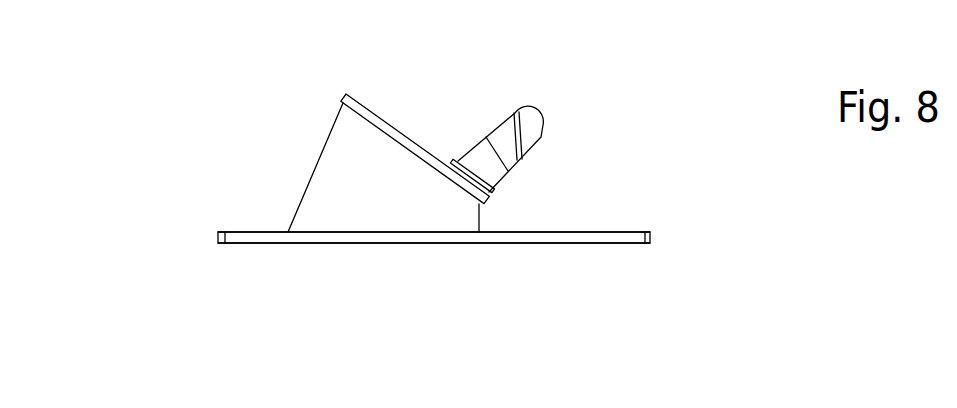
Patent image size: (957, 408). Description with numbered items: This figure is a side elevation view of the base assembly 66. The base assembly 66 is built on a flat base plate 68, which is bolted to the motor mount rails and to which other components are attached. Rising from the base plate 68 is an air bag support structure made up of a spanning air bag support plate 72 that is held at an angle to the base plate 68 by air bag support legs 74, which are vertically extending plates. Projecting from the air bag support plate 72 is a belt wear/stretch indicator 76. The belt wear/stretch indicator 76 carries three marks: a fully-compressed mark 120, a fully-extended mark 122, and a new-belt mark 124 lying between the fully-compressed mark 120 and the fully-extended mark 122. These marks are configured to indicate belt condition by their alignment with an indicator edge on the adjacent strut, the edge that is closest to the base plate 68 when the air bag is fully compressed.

The base assembly 66 is at (229, 97).
The base plate 68 is at (628, 240).
The air bag support plate 72 is at (377, 110).
The air bag support legs 74 is at (342, 185).
The belt wear/stretch indicator 76 is at (526, 130).
The fully-compressed mark 120 is at (460, 161).
The fully-extended mark 122 is at (514, 112).
The new-belt mark 124 is at (482, 133).